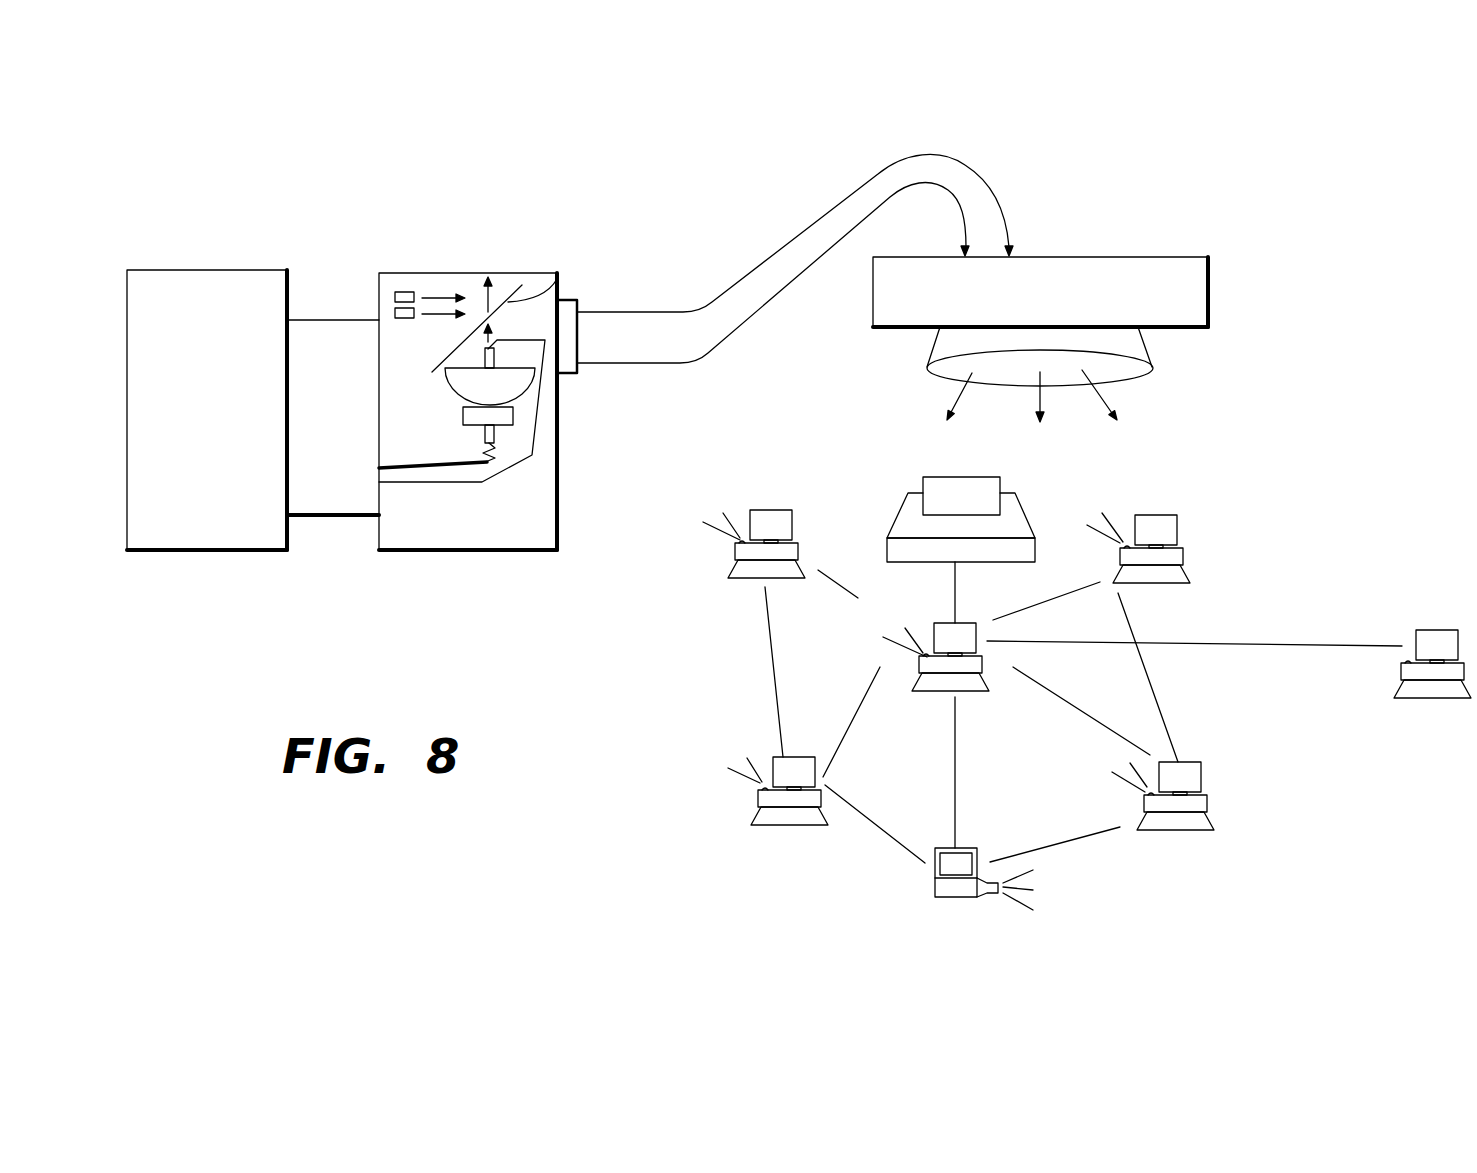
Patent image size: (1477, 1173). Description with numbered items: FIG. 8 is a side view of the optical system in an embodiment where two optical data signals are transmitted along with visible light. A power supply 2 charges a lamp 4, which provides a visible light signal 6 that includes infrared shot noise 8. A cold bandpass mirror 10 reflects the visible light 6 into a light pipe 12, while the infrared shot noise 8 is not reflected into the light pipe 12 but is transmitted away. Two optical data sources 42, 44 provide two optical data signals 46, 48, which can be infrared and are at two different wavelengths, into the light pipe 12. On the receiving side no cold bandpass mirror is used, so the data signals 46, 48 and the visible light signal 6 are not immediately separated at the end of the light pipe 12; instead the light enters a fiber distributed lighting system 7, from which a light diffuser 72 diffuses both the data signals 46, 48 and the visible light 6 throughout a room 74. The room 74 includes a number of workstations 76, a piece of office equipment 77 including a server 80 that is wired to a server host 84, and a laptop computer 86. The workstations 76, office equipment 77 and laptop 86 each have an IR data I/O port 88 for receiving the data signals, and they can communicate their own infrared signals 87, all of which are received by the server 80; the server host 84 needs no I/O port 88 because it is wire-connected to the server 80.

The power supply 2 is at (188, 452).
The lamp 4 is at (480, 396).
The visible light signal 6 is at (1036, 398).
The fiber distributed lighting system 7 is at (1209, 311).
The infrared shot noise 8 is at (415, 363).
The cold bandpass mirror 10 is at (559, 277).
The light pipe 12 is at (625, 364).
The optical data source 42 is at (403, 291).
The optical data source 44 is at (394, 314).
The optical data signal 46 is at (439, 297).
The optical data signal 48 is at (437, 316).
The light diffuser 72 is at (927, 353).
The room 74 is at (1282, 532).
The workstation 76 is at (768, 510).
The piece of office equipment 77 is at (888, 530).
The server 80 is at (913, 688).
The server host 84 is at (1443, 630).
The laptop computer 86 is at (942, 848).
The infrared signals 87 is at (706, 514).
The IR data I/O port 88 is at (740, 539).